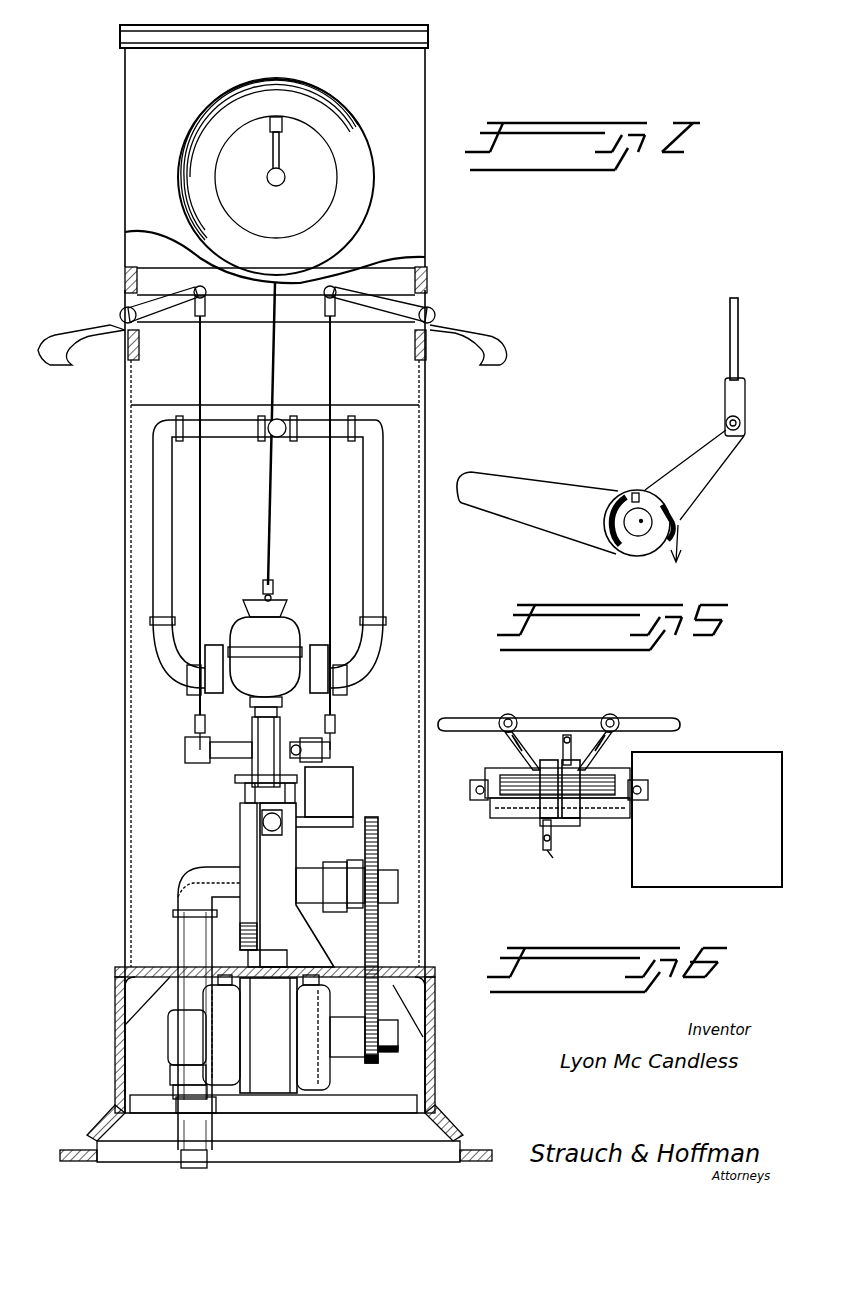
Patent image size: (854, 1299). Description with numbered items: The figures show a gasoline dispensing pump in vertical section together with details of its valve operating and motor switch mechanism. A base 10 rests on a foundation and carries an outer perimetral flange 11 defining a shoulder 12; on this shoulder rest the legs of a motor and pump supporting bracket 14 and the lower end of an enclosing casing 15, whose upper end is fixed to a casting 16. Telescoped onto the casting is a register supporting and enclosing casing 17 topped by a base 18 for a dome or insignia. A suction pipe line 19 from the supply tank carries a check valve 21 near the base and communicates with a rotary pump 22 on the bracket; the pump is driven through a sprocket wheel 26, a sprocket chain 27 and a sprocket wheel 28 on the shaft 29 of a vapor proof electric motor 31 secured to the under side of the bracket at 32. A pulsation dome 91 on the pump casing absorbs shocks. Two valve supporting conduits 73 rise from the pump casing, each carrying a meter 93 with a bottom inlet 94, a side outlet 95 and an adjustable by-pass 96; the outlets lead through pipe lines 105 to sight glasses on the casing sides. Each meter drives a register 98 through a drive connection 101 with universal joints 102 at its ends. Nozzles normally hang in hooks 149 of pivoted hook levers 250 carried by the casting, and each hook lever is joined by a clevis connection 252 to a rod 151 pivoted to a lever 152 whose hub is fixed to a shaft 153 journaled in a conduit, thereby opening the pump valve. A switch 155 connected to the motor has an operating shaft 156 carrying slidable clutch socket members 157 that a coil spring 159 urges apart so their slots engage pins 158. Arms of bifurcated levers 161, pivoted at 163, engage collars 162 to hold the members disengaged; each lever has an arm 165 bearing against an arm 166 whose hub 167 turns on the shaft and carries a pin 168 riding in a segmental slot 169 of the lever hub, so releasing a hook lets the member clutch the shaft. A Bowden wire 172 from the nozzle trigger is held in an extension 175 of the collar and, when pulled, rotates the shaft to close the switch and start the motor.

In FIG. 2, the base 10 is at (462, 1140).
In FIG. 2, the outer perimetral flange 11 is at (388, 1108).
In FIG. 2, the shoulder 12 is at (440, 1112).
In FIG. 2, the motor and pump supporting bracket 14 is at (385, 968).
In FIG. 2, the casing 15 is at (440, 524).
In FIG. 2, the casting 16 is at (428, 272).
In FIG. 2, the register supporting and enclosing casing 17 is at (405, 230).
In FIG. 2, the base for a dome 18 is at (124, 40).
In FIG. 2, the suction pipe line 19 is at (210, 1160).
In FIG. 2, the check valve 21 is at (176, 1122).
In FIG. 2, the pump 22 is at (275, 870).
In FIG. 2, the sprocket wheel 26 is at (378, 840).
In FIG. 2, the sprocket chain 27 is at (378, 935).
In FIG. 2, the sprocket wheel 28 is at (367, 1058).
In FIG. 2, the shaft 29 is at (360, 1010).
In FIG. 2, the vapor proof electric motor 31 is at (266, 1034).
In FIG. 2, the motor securing means 32 is at (268, 945).
In FIG. 2, the valve supporting conduit 73 is at (292, 745).
In FIG. 2, the pulsation dome 91 is at (262, 822).
In FIG. 2, the meter 93 is at (285, 635).
In FIG. 2, the bottom inlet 94 is at (248, 705).
In FIG. 2, the side outlet 95 is at (230, 622).
In FIG. 2, the adjustable by-pass 96 is at (185, 690).
In FIG. 2, the register 98 is at (320, 165).
In FIG. 2, the drive connection 101 is at (272, 540).
In FIG. 2, the universal joint 102 is at (275, 590).
In FIG. 2, the pipe line 105 is at (160, 605).
In FIG. 2, the hook 149 is at (70, 318).
In FIG. 2, the rod 151 is at (205, 405).
In FIG. 5, the rod 151 is at (725, 325).
In FIG. 2, the lever 152 is at (193, 722).
In FIG. 5, the lever 152 is at (642, 570).
In FIG. 5, the shaft 153 is at (630, 535).
In FIG. 2, the switch 155 is at (353, 775).
In FIG. 6, the switch 155 is at (725, 748).
In FIG. 2, the operating shaft 156 is at (243, 790).
In FIG. 6, the operating shaft 156 is at (490, 778).
In FIG. 6, the clutch socket member 157 is at (505, 752).
In FIG. 6, the pin 158 is at (470, 795).
In FIG. 6, the coil spring 159 is at (525, 760).
In FIG. 6, the bifurcated lever 161 is at (512, 715).
In FIG. 6, the collar 162 is at (535, 826).
In FIG. 6, the pivot 163 is at (503, 715).
In FIG. 6, the arm 165 is at (468, 708).
In FIG. 5, the arm 166 is at (505, 470).
In FIG. 2, the hub 167 is at (205, 737).
In FIG. 5, the pin 168 is at (636, 492).
In FIG. 5, the segmental slot 169 is at (604, 512).
In FIG. 6, the Bowden wire 172 is at (562, 859).
In FIG. 6, the extension 175 is at (562, 737).
In FIG. 2, the crank 250 is at (165, 292).
In FIG. 2, the clevis 252 is at (215, 310).